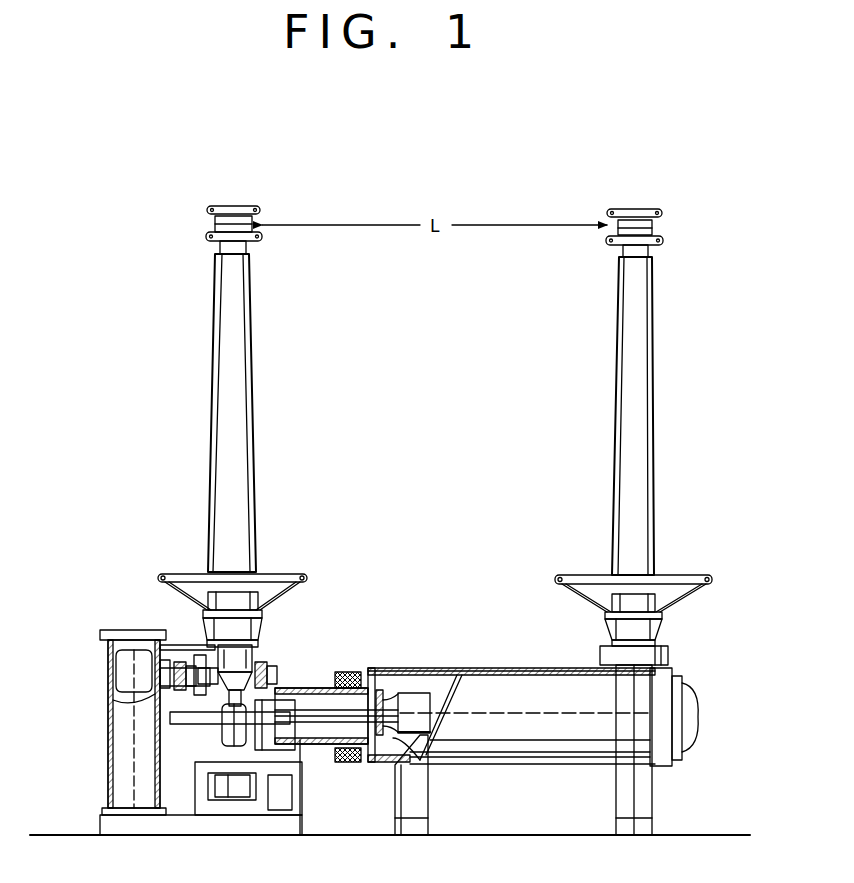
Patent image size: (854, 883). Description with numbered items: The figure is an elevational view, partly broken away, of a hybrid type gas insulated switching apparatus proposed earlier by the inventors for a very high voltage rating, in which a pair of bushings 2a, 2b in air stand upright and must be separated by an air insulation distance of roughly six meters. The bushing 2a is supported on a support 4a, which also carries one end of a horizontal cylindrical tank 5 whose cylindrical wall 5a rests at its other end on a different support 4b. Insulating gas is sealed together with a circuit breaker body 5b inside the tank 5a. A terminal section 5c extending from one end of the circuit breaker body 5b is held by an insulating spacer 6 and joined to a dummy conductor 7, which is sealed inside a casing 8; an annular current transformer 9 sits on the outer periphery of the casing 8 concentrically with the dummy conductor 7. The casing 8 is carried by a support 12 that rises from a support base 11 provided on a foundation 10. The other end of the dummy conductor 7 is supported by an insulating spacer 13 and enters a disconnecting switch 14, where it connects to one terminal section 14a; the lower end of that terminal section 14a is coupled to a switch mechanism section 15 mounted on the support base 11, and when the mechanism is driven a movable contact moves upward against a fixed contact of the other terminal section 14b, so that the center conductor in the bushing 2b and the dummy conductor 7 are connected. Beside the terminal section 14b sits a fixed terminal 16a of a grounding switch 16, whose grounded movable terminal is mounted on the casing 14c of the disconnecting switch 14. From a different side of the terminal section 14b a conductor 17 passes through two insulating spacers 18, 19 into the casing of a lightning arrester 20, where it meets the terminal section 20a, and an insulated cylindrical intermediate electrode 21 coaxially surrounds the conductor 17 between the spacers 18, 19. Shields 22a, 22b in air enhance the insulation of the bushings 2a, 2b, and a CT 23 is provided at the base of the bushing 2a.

The bushing in air 2a is at (654, 396).
The bushing in air 2b is at (252, 392).
The support 4a is at (652, 792).
The support 4b is at (428, 792).
The horizontal cylindrical tank 5 is at (538, 701).
The cylindrical tank 5a is at (506, 661).
The circuit breaker body 5b is at (425, 711).
The terminal section 5c is at (397, 706).
The insulating spacer 6 is at (372, 764).
The dummy conductor 7 is at (342, 710).
The casing 8 is at (335, 755).
The annular current transformer 9 is at (346, 672).
The foundation 10 is at (300, 823).
The support base 11 is at (300, 800).
The support 12 is at (308, 774).
The insulating spacer 13 is at (262, 750).
The disconnecting switch 14 is at (205, 720).
The terminal section 14a is at (222, 738).
The terminal section 14b is at (246, 660).
The casing 14c is at (248, 648).
The switch mechanism section 15 is at (226, 798).
The grounding switch 16 is at (277, 672).
The fixed terminal 16a is at (192, 690).
The conductor 17 is at (205, 668).
The insulating spacer 18 is at (198, 655).
The insulating spacer 19 is at (160, 650).
The lightning arrester 20 is at (108, 660).
The terminal section 20a is at (100, 636).
The insulated cylindrical intermediate electrode 21 is at (170, 650).
The shield in air 22a is at (712, 560).
The shield in air 22b is at (295, 574).
The CT 23 is at (668, 655).